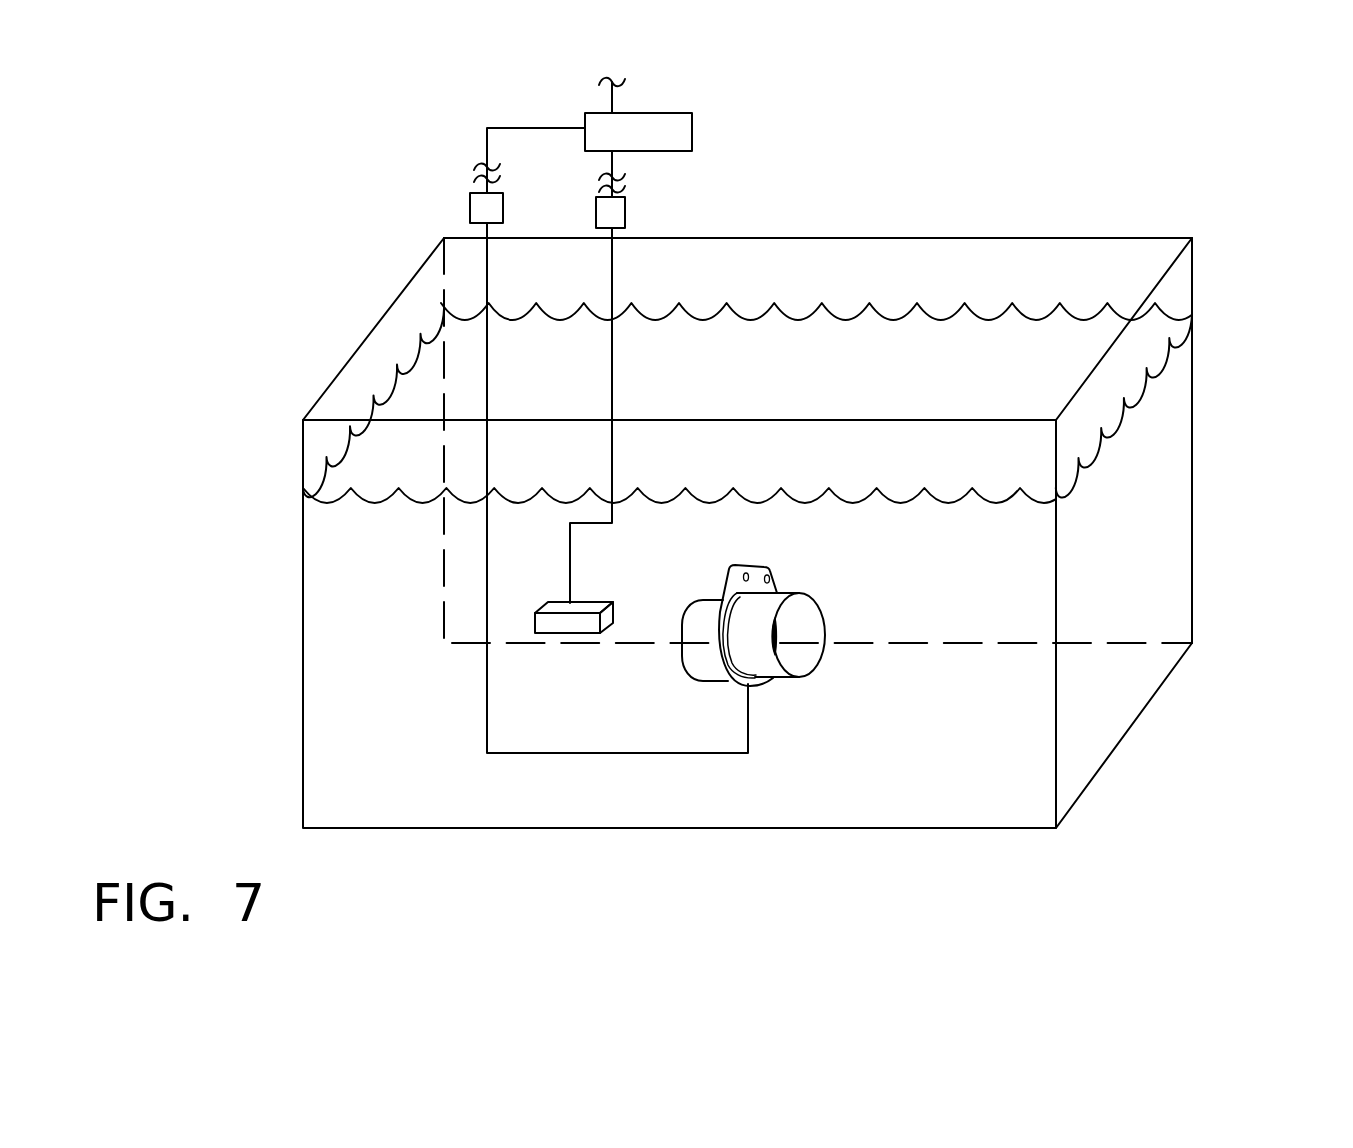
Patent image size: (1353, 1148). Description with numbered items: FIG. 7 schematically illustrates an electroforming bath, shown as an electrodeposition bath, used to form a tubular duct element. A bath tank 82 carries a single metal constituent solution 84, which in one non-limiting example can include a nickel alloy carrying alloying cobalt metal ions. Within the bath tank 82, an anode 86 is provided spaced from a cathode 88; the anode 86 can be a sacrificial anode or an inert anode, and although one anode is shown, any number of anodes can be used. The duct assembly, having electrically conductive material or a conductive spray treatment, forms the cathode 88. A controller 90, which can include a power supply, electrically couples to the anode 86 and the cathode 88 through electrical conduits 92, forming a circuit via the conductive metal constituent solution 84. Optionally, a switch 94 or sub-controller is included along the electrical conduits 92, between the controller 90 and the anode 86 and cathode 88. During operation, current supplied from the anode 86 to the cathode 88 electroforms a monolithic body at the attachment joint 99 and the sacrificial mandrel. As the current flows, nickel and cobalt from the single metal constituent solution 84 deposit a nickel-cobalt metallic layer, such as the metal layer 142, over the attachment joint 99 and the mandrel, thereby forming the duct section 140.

The bath tank 82 is at (1192, 445).
The single metal constituent solution 84 is at (1168, 366).
The anode 86 is at (602, 603).
The cathode 88 is at (768, 683).
The controller 90 is at (673, 113).
The electrical conduits 92 is at (487, 272).
The switch 94 is at (469, 206).
The attachment joint 99 is at (747, 565).
The duct section 140 is at (792, 584).
The metal layer 142 is at (843, 662).